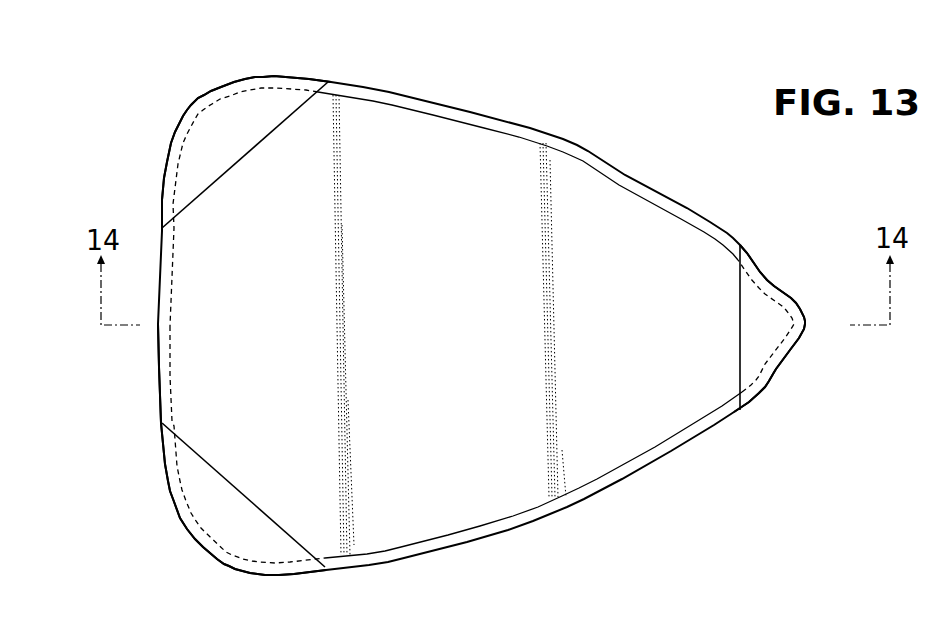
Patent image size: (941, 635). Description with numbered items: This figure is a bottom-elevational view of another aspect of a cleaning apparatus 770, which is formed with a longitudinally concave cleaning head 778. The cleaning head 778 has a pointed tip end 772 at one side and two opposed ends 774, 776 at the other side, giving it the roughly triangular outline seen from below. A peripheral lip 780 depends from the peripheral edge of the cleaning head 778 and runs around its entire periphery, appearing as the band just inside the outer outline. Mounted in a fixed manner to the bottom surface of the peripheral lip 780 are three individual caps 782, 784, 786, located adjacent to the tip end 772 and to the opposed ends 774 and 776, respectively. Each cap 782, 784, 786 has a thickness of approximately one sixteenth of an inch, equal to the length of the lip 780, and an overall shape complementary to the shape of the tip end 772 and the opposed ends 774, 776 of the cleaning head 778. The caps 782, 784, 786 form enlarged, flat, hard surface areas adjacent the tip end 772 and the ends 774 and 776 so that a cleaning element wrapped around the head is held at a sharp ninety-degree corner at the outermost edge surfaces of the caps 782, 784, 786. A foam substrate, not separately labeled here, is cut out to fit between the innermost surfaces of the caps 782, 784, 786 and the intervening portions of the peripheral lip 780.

The cleaning apparatus 770 is at (518, 98).
The tip end 772 is at (807, 325).
The opposed end 774 is at (197, 103).
The opposed end 776 is at (170, 493).
The cleaning head 778 is at (378, 125).
The peripheral lip 780 is at (600, 167).
The cap 782 is at (762, 303).
The cap 784 is at (207, 163).
The cap 786 is at (253, 535).